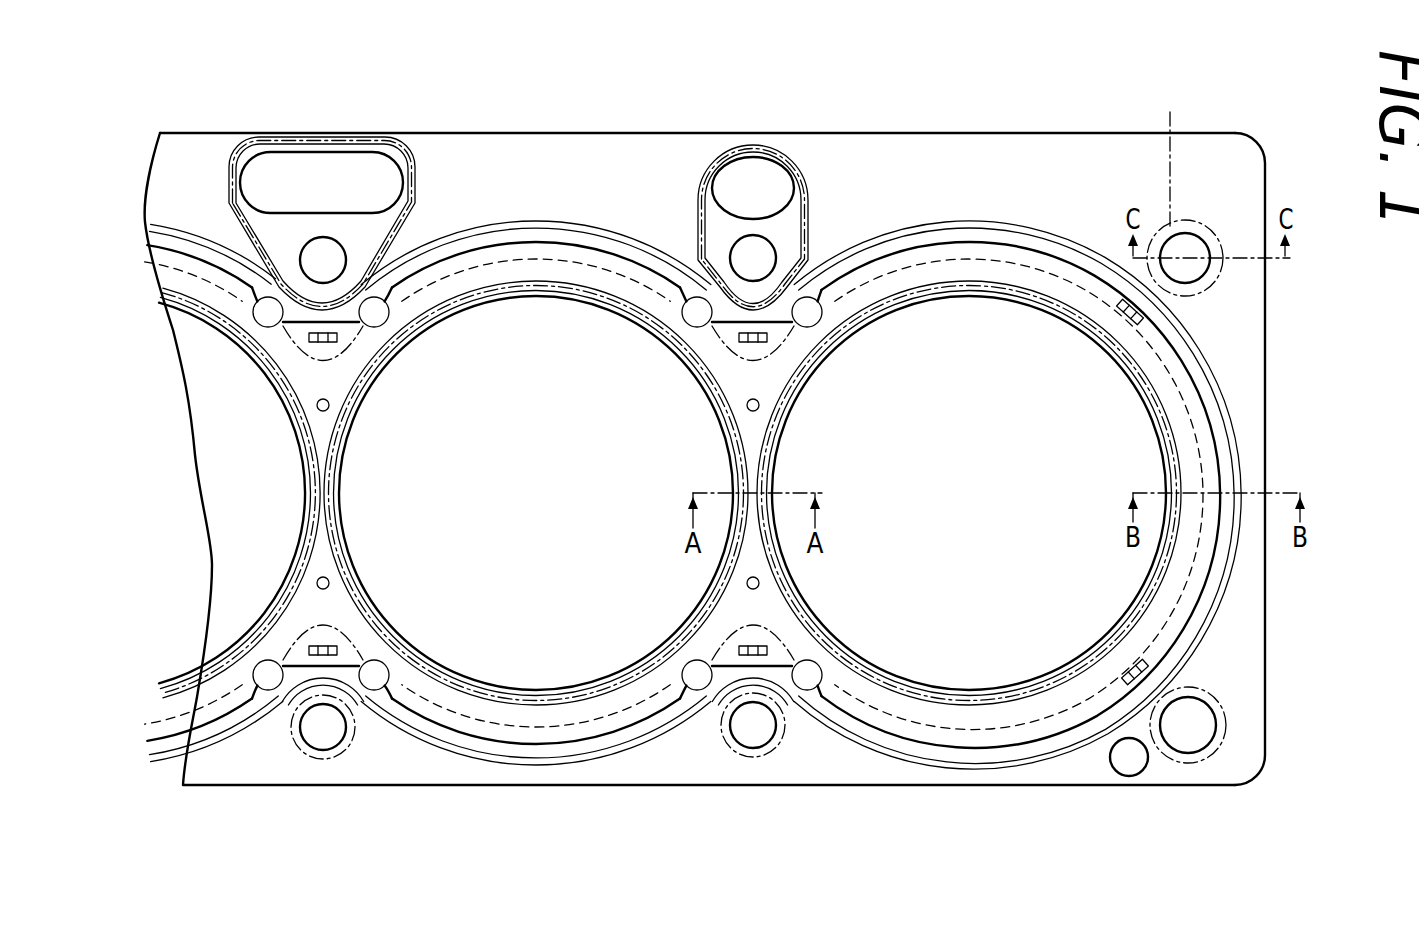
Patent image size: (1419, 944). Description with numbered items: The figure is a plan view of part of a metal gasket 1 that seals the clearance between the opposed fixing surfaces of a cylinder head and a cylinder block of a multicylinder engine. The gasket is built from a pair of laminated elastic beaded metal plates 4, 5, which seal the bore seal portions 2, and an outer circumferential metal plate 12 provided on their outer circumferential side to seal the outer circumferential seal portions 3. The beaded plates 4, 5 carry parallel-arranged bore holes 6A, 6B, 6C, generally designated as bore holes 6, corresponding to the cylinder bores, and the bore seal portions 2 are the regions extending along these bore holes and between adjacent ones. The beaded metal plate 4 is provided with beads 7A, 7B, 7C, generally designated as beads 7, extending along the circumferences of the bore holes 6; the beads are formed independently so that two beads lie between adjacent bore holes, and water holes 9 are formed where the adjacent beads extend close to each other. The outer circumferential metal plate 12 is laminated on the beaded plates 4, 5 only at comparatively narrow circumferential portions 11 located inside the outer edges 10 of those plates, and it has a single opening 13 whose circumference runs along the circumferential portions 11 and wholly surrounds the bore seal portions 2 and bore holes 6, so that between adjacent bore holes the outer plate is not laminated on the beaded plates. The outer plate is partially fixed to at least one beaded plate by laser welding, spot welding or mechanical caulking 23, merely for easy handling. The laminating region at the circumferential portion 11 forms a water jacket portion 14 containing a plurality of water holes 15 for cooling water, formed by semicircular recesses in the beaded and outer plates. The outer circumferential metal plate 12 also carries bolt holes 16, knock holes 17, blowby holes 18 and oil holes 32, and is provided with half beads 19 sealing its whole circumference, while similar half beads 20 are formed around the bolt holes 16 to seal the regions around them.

The metal gasket 1 is at (962, 126).
The bore seal portions 2 is at (1198, 436).
The outer circumferential seal portions 3 is at (1247, 663).
The beaded metal plate 4 is at (1208, 578).
The beaded metal plate 5 is at (1280, 584).
The bore holes 6 is at (270, 385).
The bore hole 6A is at (957, 486).
The bore hole 6B is at (522, 486).
The bore hole 6C is at (214, 486).
The beads 7 is at (310, 527).
The bead 7A is at (961, 696).
The bead 7B is at (505, 693).
The bead 7C is at (290, 602).
The water holes 9 is at (330, 408).
The outer edges 10 is at (550, 240).
The circumferential portions 11 is at (1030, 262).
The outer circumferential metal plate 12 is at (634, 178).
The opening 13 is at (506, 264).
The water jacket portion 14 is at (255, 288).
The water holes 15 is at (262, 320).
The bolt holes 16 is at (323, 258).
The knock holes 17 is at (1198, 729).
The blowby holes 18 is at (282, 172).
The half beads 19 is at (1243, 456).
The half beads 20 is at (1172, 152).
The laser welding, spot welding or mechanical caulking 23 is at (338, 341).
The oil holes 32 is at (1131, 770).